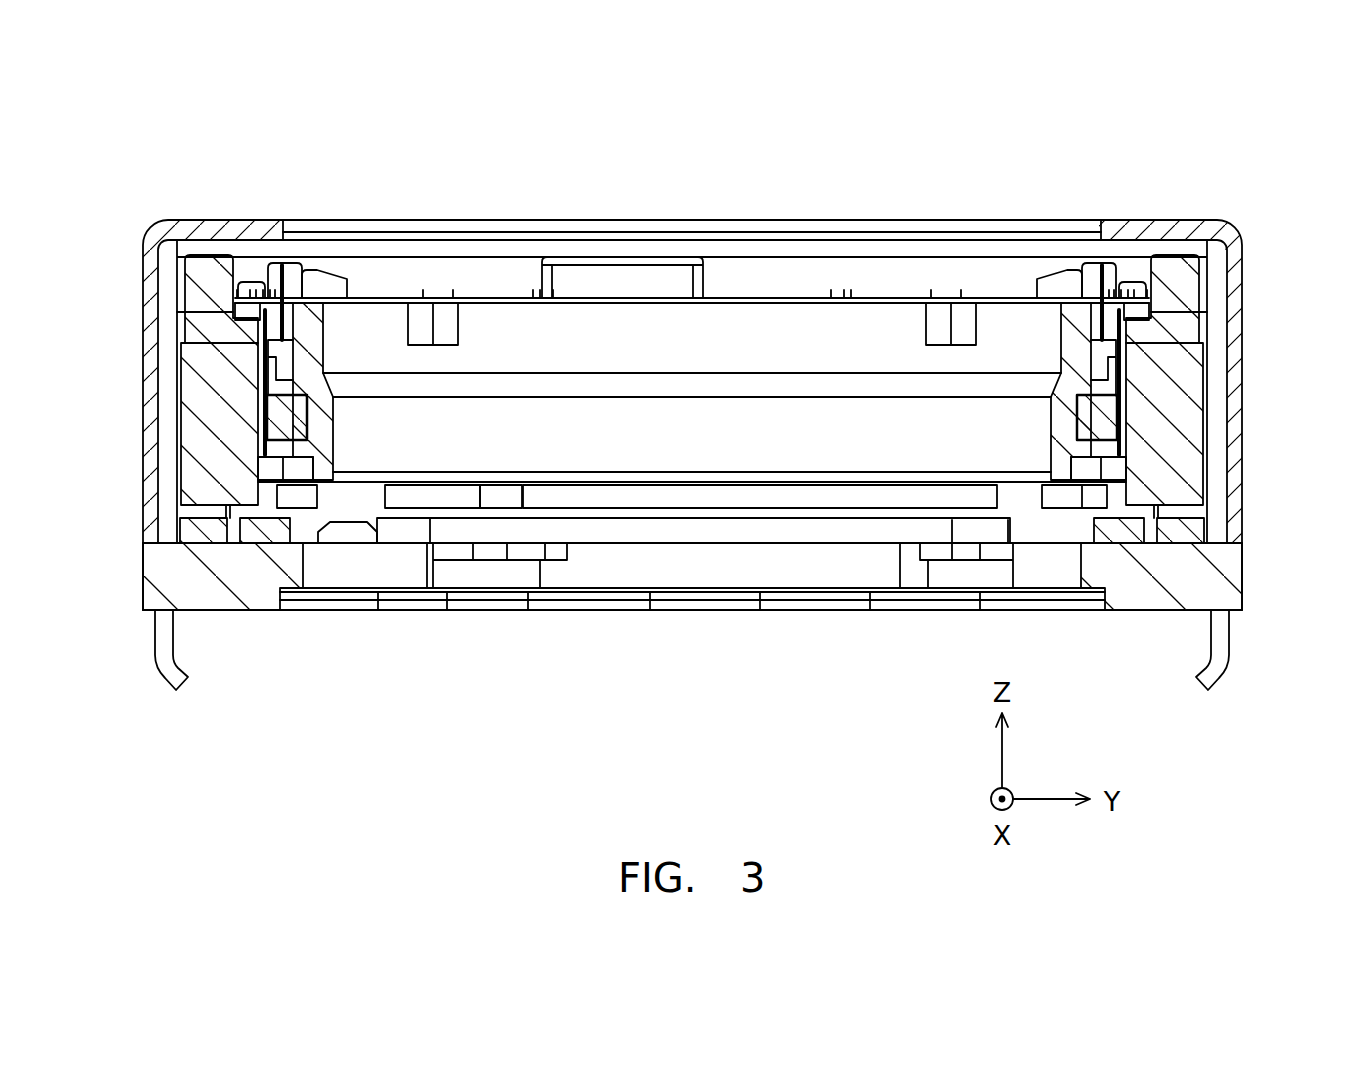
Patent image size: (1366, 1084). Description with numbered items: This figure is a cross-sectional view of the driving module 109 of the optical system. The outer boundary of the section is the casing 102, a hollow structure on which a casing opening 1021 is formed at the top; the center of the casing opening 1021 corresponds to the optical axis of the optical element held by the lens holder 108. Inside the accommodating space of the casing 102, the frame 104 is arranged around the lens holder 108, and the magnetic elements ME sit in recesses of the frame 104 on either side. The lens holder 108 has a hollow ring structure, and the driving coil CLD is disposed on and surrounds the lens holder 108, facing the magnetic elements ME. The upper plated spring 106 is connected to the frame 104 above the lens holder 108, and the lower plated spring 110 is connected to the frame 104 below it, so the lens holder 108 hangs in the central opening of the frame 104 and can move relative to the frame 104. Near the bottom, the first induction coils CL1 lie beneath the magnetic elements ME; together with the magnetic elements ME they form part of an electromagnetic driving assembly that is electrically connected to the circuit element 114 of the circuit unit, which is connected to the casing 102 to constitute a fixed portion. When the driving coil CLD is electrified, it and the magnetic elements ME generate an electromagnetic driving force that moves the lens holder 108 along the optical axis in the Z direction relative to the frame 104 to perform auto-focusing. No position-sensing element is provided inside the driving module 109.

The casing 102 is at (213, 228).
The casing opening 1021 is at (358, 228).
The frame 104 is at (178, 318).
The upper plated spring 106 is at (477, 300).
The lens holder 108 is at (588, 327).
The driving module 109 is at (1285, 157).
The lower plated spring 110 is at (350, 482).
The circuit element 114 is at (163, 575).
The magnetic element ME is at (190, 413).
The driving coil CLD is at (280, 427).
The first induction coil CL1 is at (197, 528).